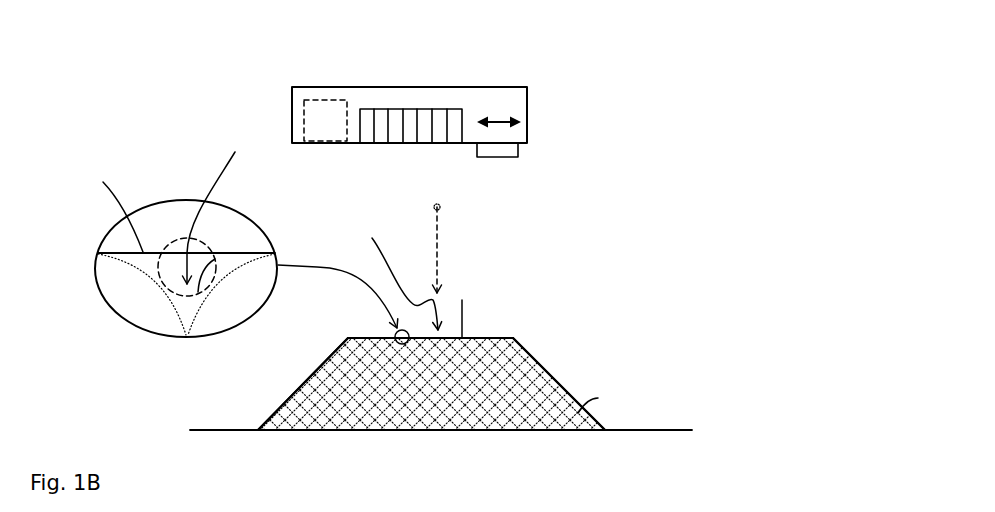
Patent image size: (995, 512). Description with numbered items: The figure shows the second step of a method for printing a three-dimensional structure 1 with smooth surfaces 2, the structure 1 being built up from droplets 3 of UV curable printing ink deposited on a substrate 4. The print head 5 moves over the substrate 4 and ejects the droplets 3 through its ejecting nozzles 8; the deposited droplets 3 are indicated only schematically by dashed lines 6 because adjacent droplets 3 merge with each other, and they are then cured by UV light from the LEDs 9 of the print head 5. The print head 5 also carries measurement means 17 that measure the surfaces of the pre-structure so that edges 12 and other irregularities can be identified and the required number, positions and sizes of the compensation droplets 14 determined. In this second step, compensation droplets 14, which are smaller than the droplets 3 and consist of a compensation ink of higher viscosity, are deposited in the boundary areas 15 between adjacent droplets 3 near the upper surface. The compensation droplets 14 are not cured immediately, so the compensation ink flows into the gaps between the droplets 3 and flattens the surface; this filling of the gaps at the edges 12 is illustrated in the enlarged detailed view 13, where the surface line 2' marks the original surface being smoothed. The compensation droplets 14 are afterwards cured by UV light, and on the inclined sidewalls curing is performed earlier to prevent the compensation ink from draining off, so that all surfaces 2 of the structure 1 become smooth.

The three-dimensional structure 1 is at (609, 337).
The smooth surfaces 2 is at (380, 339).
The surface line in magnified view 2' is at (113, 216).
The droplets 3 is at (130, 296).
The substrate 4 is at (655, 430).
The print head 5 is at (520, 112).
The dashed lines 6 is at (598, 398).
The ejecting nozzles 8 is at (450, 110).
The LEDs 9 is at (508, 148).
The edges 12 is at (312, 230).
The detailed view 13 is at (168, 198).
The compensation droplets 14 is at (182, 297).
The boundary areas 15 is at (215, 259).
The measurement means 17 is at (337, 127).